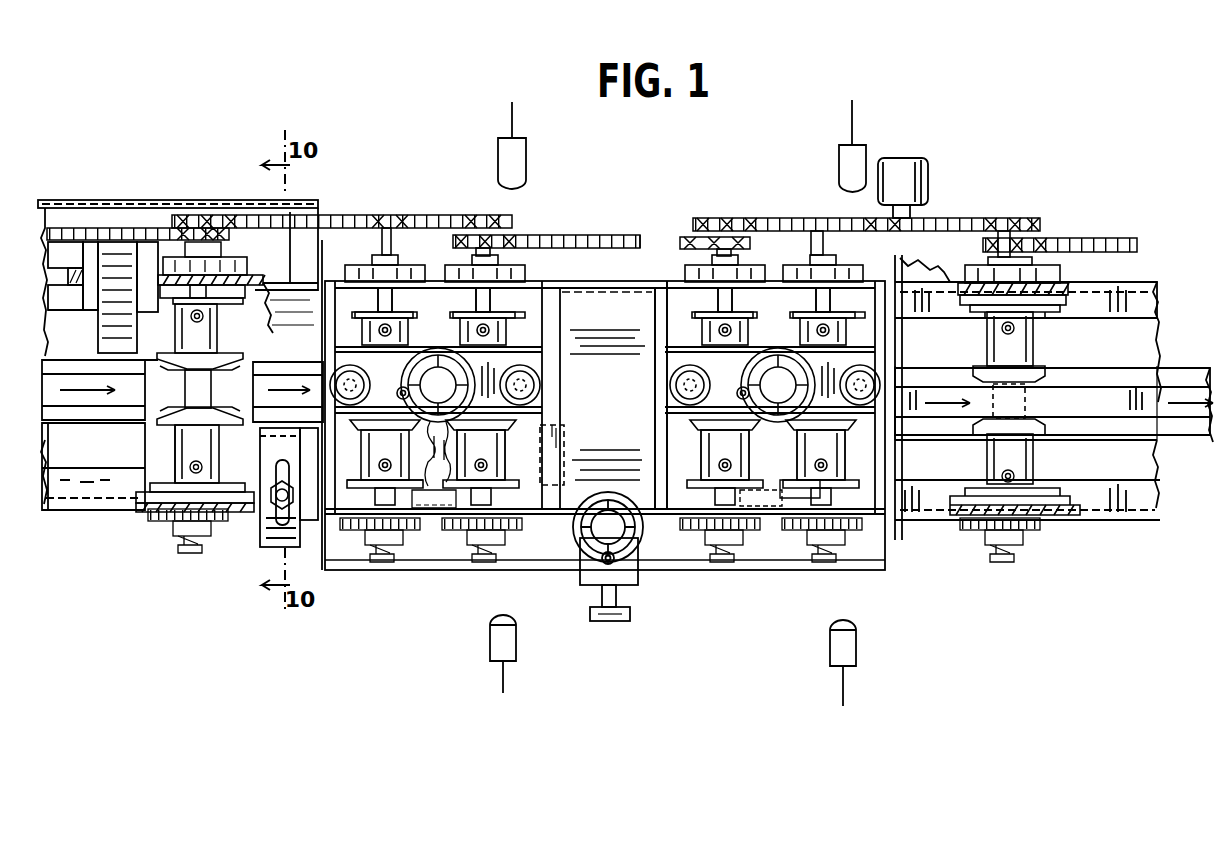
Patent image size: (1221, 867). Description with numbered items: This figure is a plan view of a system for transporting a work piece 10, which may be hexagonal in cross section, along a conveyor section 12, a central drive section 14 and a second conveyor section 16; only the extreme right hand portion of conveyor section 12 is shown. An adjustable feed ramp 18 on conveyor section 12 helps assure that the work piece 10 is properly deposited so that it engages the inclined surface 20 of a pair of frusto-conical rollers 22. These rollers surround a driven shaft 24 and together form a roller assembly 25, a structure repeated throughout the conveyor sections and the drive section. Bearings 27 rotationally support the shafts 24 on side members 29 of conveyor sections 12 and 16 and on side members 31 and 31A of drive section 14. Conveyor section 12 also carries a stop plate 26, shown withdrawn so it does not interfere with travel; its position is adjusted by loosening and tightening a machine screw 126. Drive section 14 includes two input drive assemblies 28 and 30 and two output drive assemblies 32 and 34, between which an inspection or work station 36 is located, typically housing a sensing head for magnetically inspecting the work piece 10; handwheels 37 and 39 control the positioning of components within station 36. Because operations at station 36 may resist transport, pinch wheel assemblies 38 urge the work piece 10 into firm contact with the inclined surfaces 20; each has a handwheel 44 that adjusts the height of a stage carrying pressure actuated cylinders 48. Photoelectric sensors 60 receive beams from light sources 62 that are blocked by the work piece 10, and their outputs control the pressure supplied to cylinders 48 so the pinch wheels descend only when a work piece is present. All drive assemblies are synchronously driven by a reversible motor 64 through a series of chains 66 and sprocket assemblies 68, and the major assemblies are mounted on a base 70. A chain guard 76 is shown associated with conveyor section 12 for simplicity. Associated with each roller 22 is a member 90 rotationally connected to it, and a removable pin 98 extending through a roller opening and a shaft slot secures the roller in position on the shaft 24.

The work piece 10 is at (74, 354).
The conveyor section 12 is at (126, 548).
The drive section 14 is at (459, 580).
The second conveyor section 16 is at (1132, 530).
The adjustable feed ramp 18 is at (114, 248).
The inclined surface 20 is at (212, 394).
The frusto-conical roller 22 is at (217, 345).
The driven shaft 24 is at (219, 308).
The roller assembly 25 is at (158, 434).
The stop plate 26 is at (260, 546).
The bearing 27 is at (170, 534).
The input drive assembly 28 is at (357, 468).
The side member 29 is at (70, 246).
The input drive assembly 30 is at (514, 465).
The side member 31 is at (768, 516).
The side member 31A is at (630, 286).
The output drive assembly 32 is at (687, 466).
The output drive assembly 34 is at (844, 464).
The inspection or work station 36 is at (616, 278).
The handwheel 37 is at (580, 543).
The pinch wheel assembly 38 is at (443, 329).
The handwheel 39 is at (632, 616).
The handwheel 44 is at (438, 442).
The pressure actuated cylinder 48 is at (372, 370).
The photoelectric sensor 60 is at (526, 154).
The light source 62 is at (514, 638).
The reversible motor 64 is at (924, 174).
The chain 66 is at (616, 236).
The sprocket assembly 68 is at (192, 210).
The base 70 is at (378, 574).
The chain guard 76 is at (212, 236).
The member 90 is at (138, 490).
The removable pin 98 is at (191, 318).
The machine screw 126 is at (272, 472).